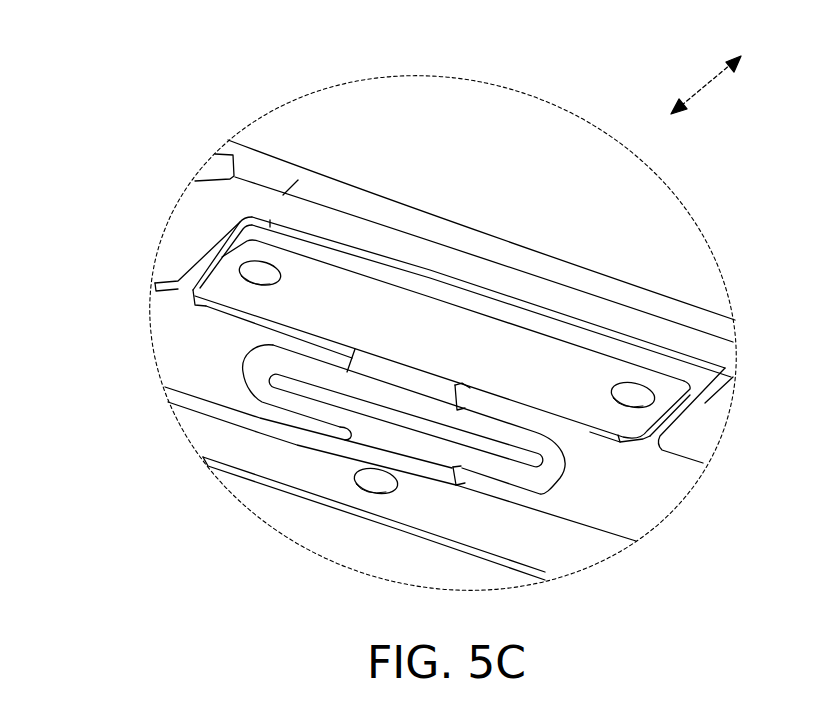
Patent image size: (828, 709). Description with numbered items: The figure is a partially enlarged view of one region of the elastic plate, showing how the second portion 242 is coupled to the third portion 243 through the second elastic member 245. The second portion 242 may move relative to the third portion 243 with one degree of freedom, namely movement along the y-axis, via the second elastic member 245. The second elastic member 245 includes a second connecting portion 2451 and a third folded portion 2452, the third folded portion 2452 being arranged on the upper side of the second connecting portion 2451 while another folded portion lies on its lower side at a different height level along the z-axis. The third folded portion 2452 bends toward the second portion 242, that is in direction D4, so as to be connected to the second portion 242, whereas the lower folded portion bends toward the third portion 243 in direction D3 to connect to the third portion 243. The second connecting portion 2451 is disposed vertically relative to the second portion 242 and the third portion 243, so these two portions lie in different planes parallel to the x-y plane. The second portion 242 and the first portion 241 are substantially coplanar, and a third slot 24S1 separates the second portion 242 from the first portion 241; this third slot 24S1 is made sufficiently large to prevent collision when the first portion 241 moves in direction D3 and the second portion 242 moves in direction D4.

The first portion 241 is at (438, 117).
The second portion 242 is at (523, 352).
The third slot 24S1 is at (325, 256).
The third portion 243 is at (540, 548).
The second elastic member 245 is at (298, 393).
The second connecting portion 2451 is at (263, 372).
The third folded portion 2452 is at (360, 352).
The direction D3 is at (689, 99).
The direction D4 is at (746, 54).